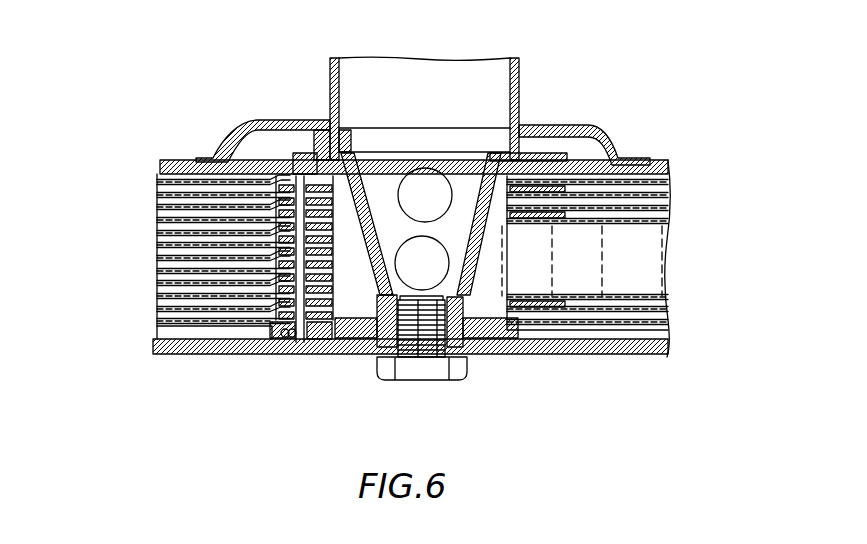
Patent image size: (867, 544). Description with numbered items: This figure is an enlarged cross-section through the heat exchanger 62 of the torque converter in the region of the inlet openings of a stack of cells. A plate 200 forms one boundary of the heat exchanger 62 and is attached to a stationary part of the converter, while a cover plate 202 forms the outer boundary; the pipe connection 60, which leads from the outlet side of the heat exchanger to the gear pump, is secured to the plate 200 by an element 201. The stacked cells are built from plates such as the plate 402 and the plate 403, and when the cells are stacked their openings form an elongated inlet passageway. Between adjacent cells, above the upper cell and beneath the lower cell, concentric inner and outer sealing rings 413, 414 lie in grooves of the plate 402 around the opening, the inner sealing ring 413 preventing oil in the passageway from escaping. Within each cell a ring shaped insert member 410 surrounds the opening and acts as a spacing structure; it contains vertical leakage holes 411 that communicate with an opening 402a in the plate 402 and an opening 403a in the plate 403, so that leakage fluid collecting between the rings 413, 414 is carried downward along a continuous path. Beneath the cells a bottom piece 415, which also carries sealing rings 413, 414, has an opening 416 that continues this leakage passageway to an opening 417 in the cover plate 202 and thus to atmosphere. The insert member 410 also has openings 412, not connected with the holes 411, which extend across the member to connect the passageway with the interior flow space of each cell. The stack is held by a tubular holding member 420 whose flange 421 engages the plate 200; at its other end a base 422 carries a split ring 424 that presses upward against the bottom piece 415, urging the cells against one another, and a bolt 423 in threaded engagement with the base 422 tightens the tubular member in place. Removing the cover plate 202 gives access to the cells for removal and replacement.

The pipe connection 60 is at (330, 68).
The heat exchanger 62 is at (223, 403).
The plate 200 is at (185, 159).
The element 201 is at (256, 119).
The cover plate 202 is at (620, 355).
The plate 402 is at (157, 203).
The opening 402a is at (322, 124).
The plate 403 is at (157, 247).
The opening 403a is at (320, 187).
The ring shaped insert member 410 is at (157, 313).
The vertical leakage hole 411 is at (327, 315).
The opening 412 is at (557, 225).
The inner sealing ring 413 is at (343, 132).
The outer sealing ring 414 is at (291, 172).
The bottom piece 415 is at (357, 354).
The opening 416 is at (298, 338).
The opening 417 is at (303, 342).
The tubular holding member 420 is at (448, 150).
The flange 421 is at (518, 118).
The base 422 is at (468, 302).
The bolt 423 is at (460, 365).
The split ring 424 is at (372, 360).